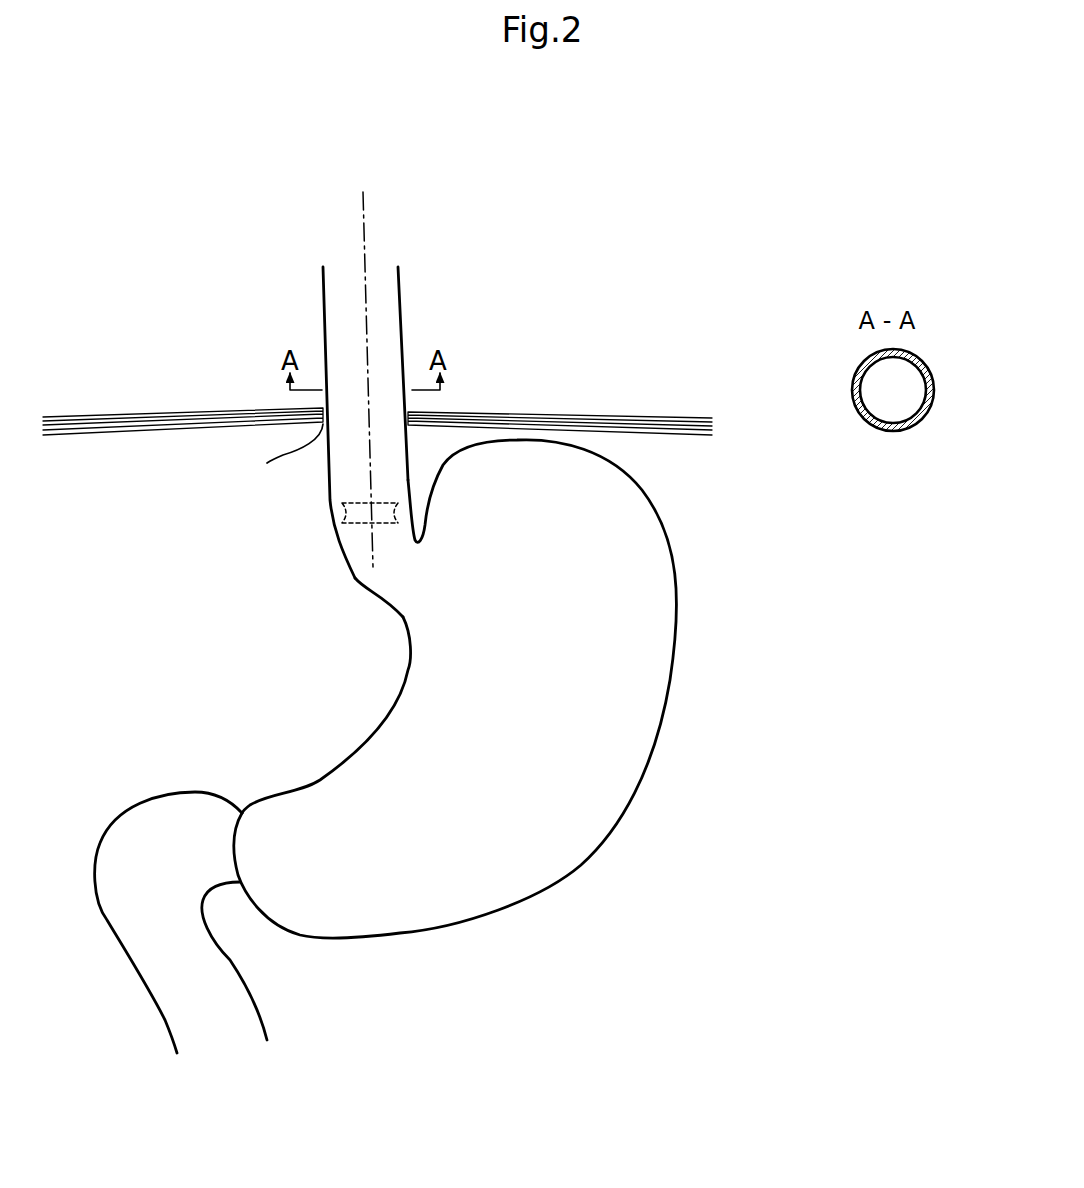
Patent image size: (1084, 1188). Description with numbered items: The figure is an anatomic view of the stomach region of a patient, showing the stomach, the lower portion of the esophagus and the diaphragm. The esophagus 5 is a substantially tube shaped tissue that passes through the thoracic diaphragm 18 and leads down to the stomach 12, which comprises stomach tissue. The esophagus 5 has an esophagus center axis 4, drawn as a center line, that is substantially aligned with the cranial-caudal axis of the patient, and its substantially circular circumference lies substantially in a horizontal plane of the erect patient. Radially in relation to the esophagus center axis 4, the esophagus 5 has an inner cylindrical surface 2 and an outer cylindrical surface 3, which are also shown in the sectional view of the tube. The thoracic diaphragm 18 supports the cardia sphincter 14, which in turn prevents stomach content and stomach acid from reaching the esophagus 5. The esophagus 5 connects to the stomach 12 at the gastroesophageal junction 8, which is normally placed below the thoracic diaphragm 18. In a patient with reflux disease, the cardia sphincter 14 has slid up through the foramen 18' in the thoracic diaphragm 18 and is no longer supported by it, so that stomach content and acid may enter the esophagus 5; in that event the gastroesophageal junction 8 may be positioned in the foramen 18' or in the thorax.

The inner cylindrical surface 2 is at (338, 283).
The outer cylindrical surface 3 is at (415, 308).
The esophagus center axis 4 is at (362, 210).
The esophagus 5 is at (305, 283).
The gastroesophageal junction 8 is at (403, 567).
The stomach 12 is at (675, 748).
The cardia sphincter 14 is at (352, 510).
The thoracic diaphragm 18 is at (377, 395).
The foramen 18' is at (281, 460).